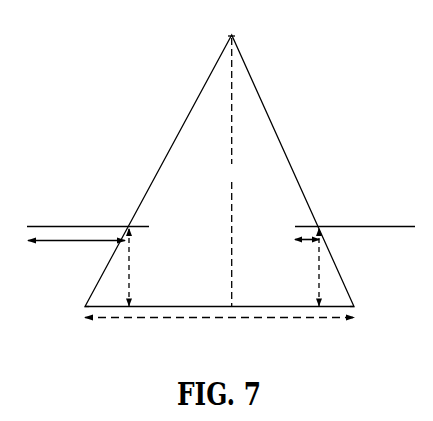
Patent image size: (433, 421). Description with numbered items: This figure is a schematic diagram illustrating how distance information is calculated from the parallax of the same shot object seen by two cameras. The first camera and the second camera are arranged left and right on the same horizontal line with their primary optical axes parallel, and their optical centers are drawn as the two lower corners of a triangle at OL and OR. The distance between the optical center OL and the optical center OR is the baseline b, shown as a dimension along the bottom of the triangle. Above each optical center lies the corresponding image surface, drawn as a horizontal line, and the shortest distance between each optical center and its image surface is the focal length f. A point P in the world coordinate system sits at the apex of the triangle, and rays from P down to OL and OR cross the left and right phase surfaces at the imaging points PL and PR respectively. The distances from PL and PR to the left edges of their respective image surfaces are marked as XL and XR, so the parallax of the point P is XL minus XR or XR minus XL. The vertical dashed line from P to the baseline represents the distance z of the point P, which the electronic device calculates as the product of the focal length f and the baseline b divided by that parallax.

The point in world coordinate system P is at (239, 37).
The imaging point on left phase surface PL is at (88, 216).
The imaging point on right phase surface PR is at (355, 216).
The optical center of first camera OL is at (72, 319).
The optical center of second camera OR is at (369, 318).
The distance from PL to left edge of image surface XL is at (76, 252).
The distance from PR to left edge of image surface XR is at (307, 252).
The focal length f is at (229, 267).
The distance between optical centers b is at (219, 328).
The distance of point P z is at (233, 172).